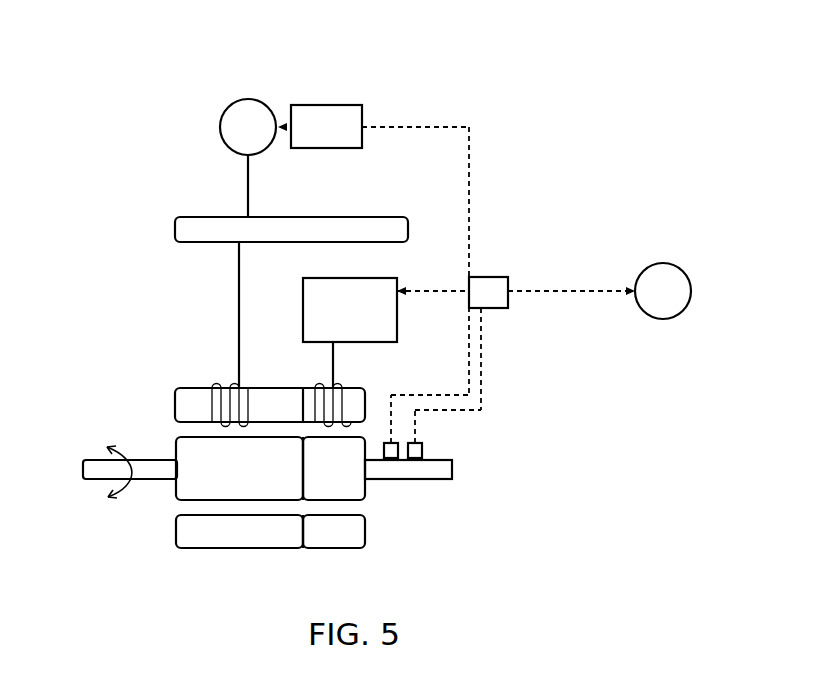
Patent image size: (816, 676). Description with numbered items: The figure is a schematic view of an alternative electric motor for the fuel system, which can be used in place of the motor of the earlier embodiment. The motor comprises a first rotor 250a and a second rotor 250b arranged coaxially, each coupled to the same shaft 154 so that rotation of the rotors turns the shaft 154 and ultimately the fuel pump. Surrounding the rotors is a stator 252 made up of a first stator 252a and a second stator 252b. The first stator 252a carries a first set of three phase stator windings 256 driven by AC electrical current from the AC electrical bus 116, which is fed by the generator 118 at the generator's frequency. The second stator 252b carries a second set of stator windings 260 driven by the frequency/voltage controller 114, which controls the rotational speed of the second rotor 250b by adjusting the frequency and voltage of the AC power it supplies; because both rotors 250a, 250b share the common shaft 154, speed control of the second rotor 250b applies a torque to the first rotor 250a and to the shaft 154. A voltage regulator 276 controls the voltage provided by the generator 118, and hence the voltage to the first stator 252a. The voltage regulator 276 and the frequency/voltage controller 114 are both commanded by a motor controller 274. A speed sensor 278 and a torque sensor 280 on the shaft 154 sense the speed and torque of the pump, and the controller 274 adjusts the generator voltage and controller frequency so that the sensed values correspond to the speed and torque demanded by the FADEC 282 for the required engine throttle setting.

The generator 118 is at (250, 102).
The voltage regulator 276 is at (327, 105).
The AC electrical bus 116 is at (175, 230).
The frequency/voltage controller 114 is at (397, 280).
The motor controller 274 is at (505, 277).
The FADEC 282 is at (663, 263).
The stator 252 is at (308, 358).
The first set of three phase stator windings 256 is at (223, 387).
The second set of stator windings 260 is at (320, 388).
The first stator 252a is at (183, 388).
The second stator 252b is at (342, 553).
The first rotor 250a is at (176, 497).
The second rotor 250b is at (367, 495).
The shaft 154 is at (452, 470).
The speed sensor 278 is at (392, 463).
The torque sensor 280 is at (423, 450).